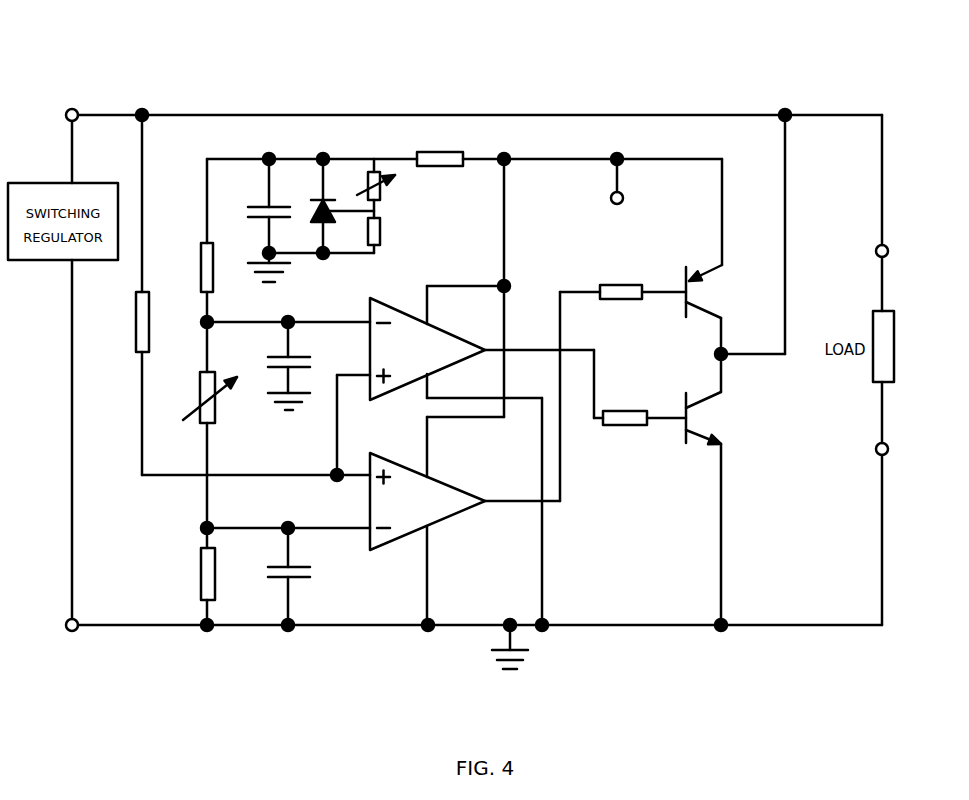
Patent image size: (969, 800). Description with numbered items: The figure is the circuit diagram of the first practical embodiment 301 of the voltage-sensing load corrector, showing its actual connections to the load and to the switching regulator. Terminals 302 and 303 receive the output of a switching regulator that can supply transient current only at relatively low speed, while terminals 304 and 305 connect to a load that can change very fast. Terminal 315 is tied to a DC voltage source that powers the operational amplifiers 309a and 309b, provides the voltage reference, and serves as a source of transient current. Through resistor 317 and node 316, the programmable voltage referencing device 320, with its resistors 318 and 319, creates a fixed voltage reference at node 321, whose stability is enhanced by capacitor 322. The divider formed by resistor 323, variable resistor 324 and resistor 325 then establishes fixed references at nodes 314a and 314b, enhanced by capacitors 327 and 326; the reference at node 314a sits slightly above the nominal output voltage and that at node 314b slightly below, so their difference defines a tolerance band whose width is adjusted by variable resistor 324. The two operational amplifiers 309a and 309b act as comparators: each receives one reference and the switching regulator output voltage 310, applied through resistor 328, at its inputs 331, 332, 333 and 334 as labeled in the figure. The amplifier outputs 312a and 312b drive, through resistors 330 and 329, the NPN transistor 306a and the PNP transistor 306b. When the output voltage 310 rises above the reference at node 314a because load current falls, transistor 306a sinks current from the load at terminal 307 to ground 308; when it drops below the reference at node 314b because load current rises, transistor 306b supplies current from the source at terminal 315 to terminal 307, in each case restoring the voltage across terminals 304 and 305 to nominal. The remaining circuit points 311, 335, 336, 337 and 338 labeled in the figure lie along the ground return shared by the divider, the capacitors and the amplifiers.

The first practical embodiment 301 is at (529, 92).
The terminal 302 is at (49, 118).
The terminal 303 is at (49, 631).
The terminal 304 is at (861, 253).
The terminal 305 is at (861, 452).
The NPN transistor 306a is at (721, 489).
The PNP transistor 306b is at (722, 309).
The terminal 307 is at (785, 219).
The ground 308 is at (727, 640).
The operational amplifier 309a is at (427, 343).
The operational amplifier 309b is at (427, 521).
The output voltage 310 is at (142, 188).
The ground 311 is at (505, 632).
The output of operational amplifier 312a is at (530, 384).
The output of operational amplifier 312b is at (539, 396).
The node 314a is at (285, 312).
The node 314b is at (285, 518).
The terminal 315 is at (617, 191).
The node 316 is at (522, 285).
The resistor 317 is at (440, 148).
The resistor 318 is at (387, 179).
The resistor 319 is at (343, 226).
The programmable voltage referencing device 320 is at (329, 206).
The node 321 is at (270, 148).
The capacitor 322 is at (257, 220).
The resistor 323 is at (187, 240).
The variable resistor 324 is at (197, 425).
The resistor 325 is at (188, 576).
The capacitor 326 is at (278, 573).
The capacitor 327 is at (269, 363).
The resistor 328 is at (216, 383).
The resistor 329 is at (643, 280).
The resistor 330 is at (644, 406).
The inverting input 331 is at (361, 311).
The non-inverting input 332 is at (361, 383).
The non-inverting input 333 is at (365, 482).
The inverting input 334 is at (363, 537).
The node 335 is at (207, 640).
The node 336 is at (293, 640).
The node 337 is at (428, 640).
The node 338 is at (506, 528).